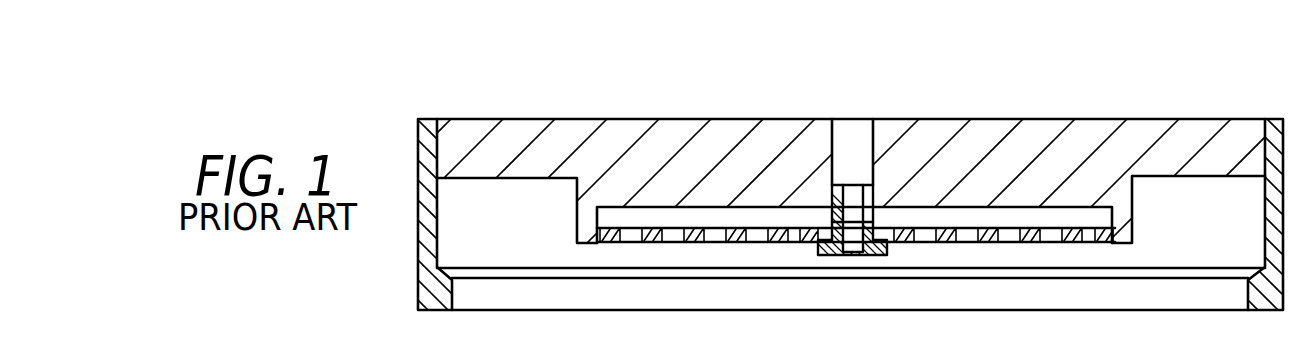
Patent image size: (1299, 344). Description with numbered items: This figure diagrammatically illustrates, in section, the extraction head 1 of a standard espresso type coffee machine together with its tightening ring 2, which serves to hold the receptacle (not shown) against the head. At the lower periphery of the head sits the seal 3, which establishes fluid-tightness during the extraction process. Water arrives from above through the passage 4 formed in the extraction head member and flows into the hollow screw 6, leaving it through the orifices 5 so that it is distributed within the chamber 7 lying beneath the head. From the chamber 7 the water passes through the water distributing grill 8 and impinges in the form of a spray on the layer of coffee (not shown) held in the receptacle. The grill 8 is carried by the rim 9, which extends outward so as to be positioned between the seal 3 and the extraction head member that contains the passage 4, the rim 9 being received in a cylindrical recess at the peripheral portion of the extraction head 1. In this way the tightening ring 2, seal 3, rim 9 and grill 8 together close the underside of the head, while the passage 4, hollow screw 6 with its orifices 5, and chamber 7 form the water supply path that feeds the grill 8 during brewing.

The extraction head 1 is at (988, 128).
The tightening ring 2 is at (430, 284).
The seal 3 is at (508, 135).
The passage 4 is at (851, 128).
The orifices 5 is at (830, 215).
The hollow screw 6 is at (875, 185).
The chamber 7 is at (645, 213).
The water distributing grill 8 is at (1020, 217).
The rim 9 is at (585, 222).